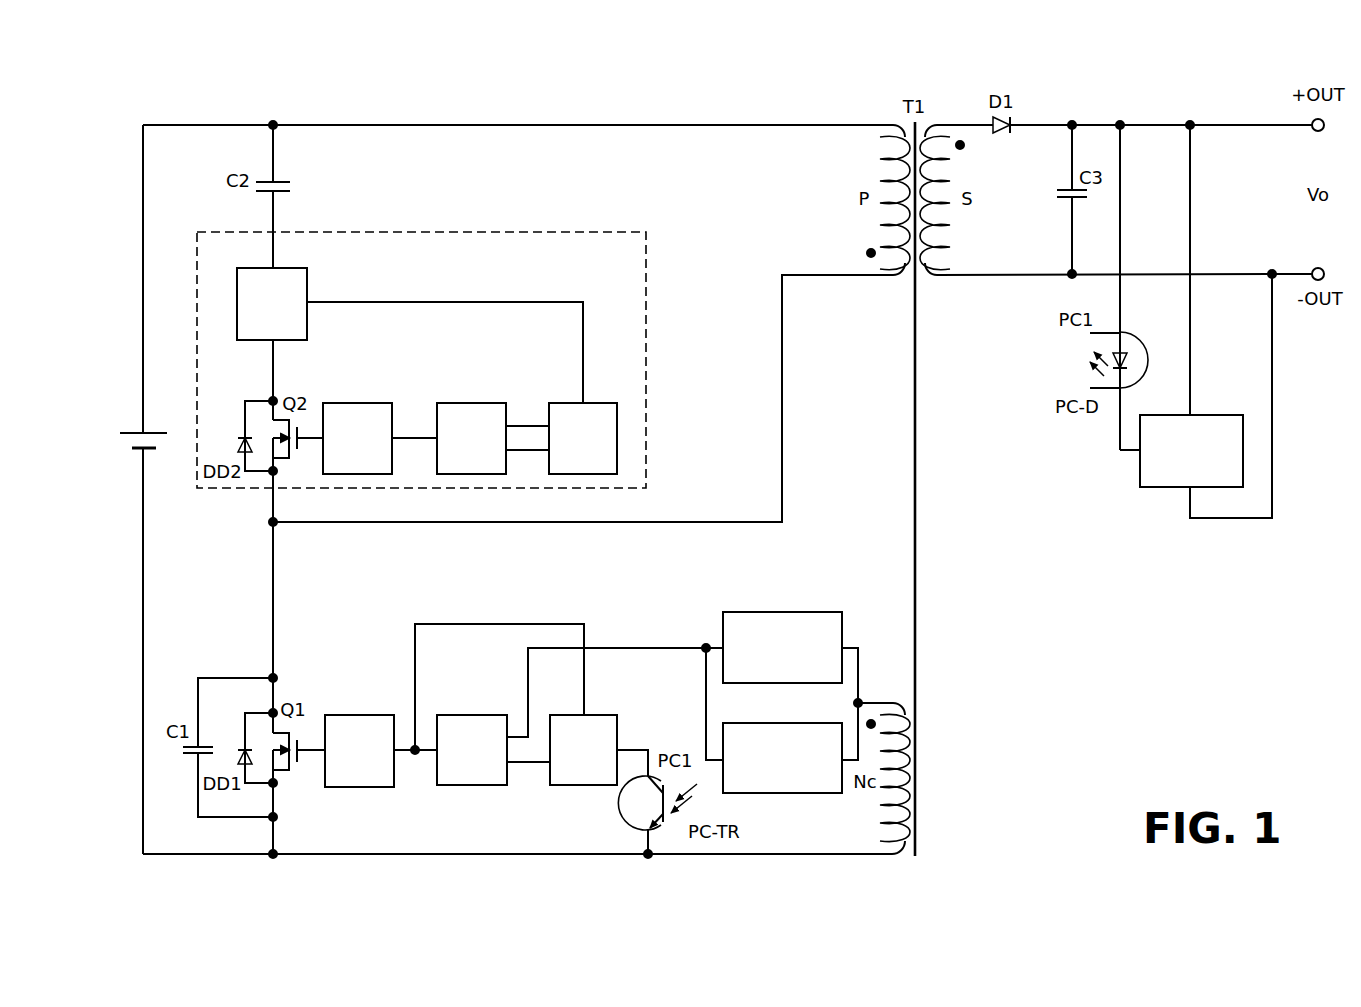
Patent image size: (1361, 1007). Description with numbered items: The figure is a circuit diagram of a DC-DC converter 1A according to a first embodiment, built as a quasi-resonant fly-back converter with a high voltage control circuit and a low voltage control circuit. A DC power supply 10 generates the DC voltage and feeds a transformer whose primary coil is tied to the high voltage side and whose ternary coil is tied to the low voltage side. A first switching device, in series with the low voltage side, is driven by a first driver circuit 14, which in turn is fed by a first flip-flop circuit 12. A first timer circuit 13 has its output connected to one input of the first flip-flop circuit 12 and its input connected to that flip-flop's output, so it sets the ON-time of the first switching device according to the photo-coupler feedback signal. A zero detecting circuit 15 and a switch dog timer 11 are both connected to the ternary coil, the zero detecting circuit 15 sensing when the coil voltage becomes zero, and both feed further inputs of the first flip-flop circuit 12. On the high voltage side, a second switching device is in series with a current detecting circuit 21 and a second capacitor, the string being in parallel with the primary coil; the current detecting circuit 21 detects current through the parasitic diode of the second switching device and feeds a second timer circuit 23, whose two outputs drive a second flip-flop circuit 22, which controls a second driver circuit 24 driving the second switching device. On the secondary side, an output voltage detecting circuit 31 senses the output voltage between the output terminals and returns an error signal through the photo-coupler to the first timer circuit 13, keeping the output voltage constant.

The DC-DC converter 1A is at (496, 96).
The DC power supply 10 is at (150, 449).
The switch dog timer 11 is at (802, 723).
The first flip-flop circuit 12 is at (467, 715).
The first timer circuit 13 is at (597, 715).
The first driver circuit 14 is at (355, 715).
The zero detecting circuit 15 is at (792, 612).
The current detecting circuit 21 is at (290, 268).
The second flip-flop circuit 22 is at (470, 403).
The second timer circuit 23 is at (594, 403).
The second driver circuit 24 is at (358, 403).
The output voltage detecting circuit 31 is at (1208, 415).